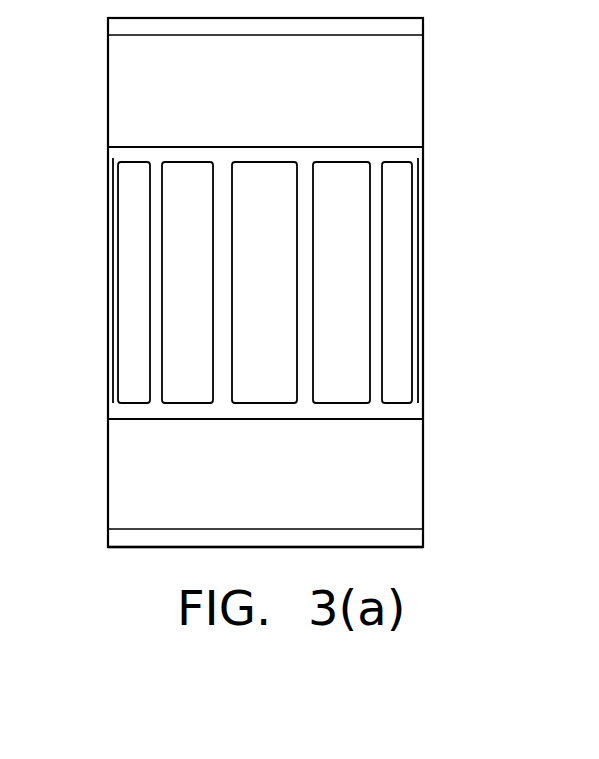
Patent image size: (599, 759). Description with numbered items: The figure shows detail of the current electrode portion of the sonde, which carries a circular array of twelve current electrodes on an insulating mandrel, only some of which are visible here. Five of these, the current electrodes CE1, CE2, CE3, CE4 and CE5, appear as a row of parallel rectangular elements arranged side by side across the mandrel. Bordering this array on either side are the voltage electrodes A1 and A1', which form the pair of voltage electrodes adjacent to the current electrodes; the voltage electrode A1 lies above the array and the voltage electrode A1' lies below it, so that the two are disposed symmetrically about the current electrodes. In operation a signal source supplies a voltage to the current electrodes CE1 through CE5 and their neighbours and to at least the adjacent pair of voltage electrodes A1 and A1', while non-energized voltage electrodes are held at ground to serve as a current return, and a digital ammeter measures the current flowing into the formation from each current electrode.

The voltage electrode A1 is at (295, 282).
The voltage electrode A1' is at (294, 483).
The current electrode CE1 is at (395, 161).
The current electrode CE2 is at (350, 163).
The current electrode CE3 is at (245, 162).
The current electrode CE4 is at (170, 162).
The current electrode CE5 is at (128, 403).